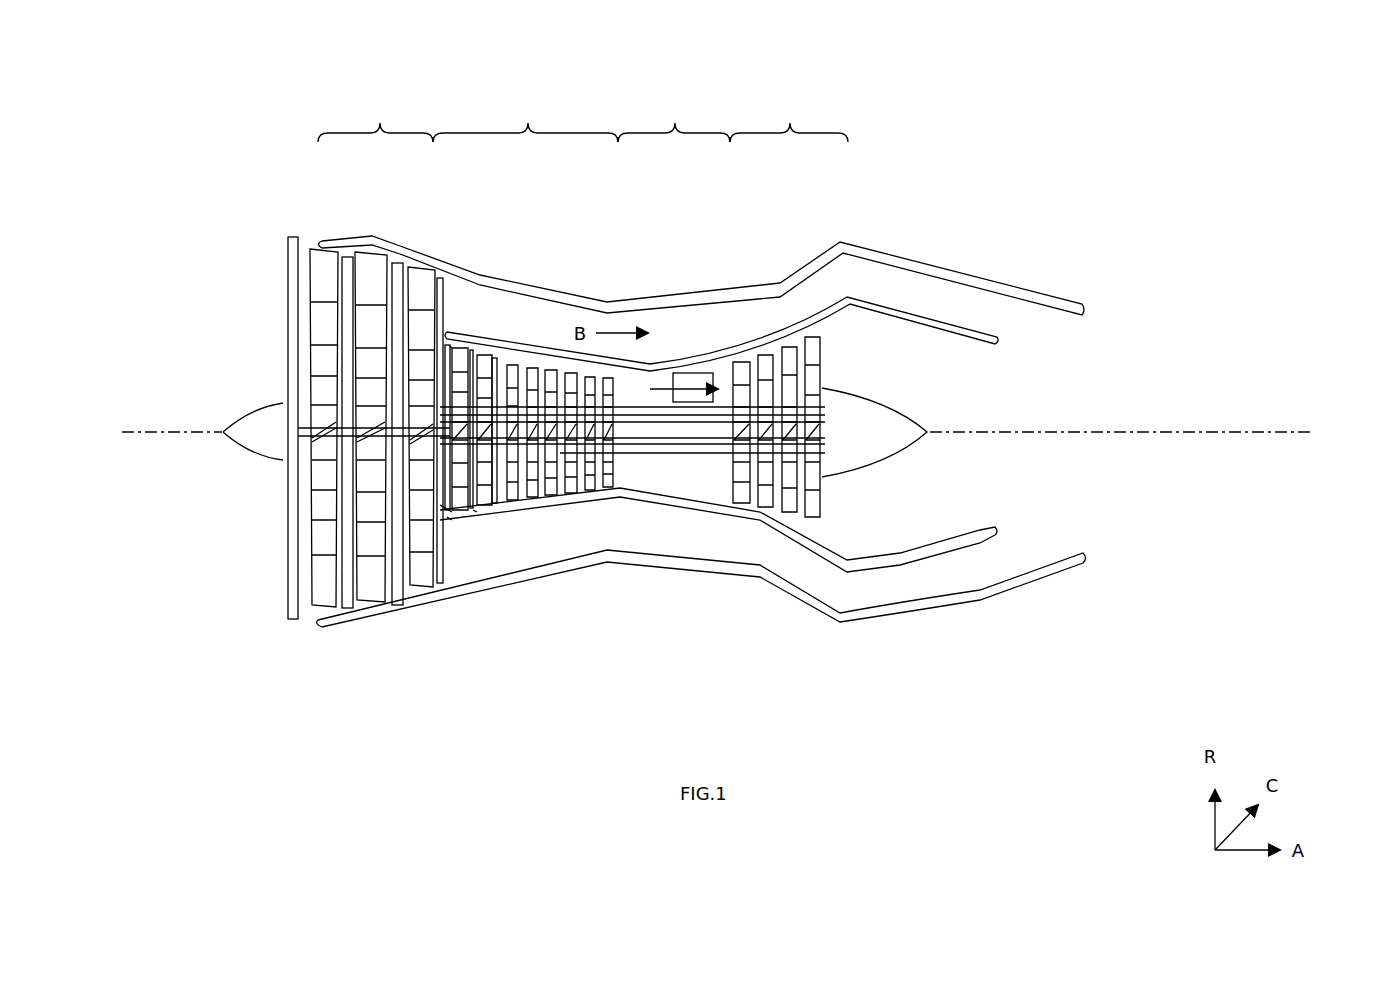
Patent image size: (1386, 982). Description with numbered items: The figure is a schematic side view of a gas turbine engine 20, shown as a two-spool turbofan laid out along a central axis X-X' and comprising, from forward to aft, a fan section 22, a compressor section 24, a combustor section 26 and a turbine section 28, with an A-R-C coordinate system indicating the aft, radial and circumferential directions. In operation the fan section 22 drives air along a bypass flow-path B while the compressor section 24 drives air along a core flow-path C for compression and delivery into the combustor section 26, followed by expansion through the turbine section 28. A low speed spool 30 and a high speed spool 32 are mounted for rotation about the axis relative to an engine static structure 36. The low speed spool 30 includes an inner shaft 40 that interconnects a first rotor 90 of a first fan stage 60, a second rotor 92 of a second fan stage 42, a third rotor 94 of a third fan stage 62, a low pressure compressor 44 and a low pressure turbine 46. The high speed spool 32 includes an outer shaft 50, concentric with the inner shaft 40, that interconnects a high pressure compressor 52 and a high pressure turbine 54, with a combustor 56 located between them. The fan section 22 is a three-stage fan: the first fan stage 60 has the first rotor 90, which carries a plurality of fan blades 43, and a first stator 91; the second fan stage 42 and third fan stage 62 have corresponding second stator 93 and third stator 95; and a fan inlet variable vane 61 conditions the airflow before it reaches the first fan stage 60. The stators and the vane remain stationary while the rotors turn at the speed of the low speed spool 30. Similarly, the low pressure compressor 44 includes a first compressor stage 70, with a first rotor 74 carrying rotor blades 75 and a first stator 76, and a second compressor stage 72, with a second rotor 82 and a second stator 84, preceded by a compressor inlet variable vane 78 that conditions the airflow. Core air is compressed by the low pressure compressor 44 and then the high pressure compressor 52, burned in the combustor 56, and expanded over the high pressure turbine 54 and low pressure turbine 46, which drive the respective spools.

The gas turbine engine 20 is at (958, 150).
The fan section 22 is at (375, 118).
The compressor section 24 is at (525, 118).
The combustor section 26 is at (674, 118).
The turbine section 28 is at (789, 118).
The low speed spool 30 is at (668, 452).
The high speed spool 32 is at (713, 462).
The engine static structure 36 is at (880, 296).
The inner shaft 40 is at (628, 442).
The second fan stage 42 is at (398, 240).
The fan blades 43 is at (296, 503).
The low pressure compressor 44 is at (516, 326).
The low pressure turbine 46 is at (797, 530).
The outer shaft 50 is at (692, 458).
The high pressure compressor 52 is at (564, 330).
The high pressure turbine 54 is at (762, 334).
The combustor 56 is at (690, 372).
The first fan stage 60 is at (345, 228).
The fan inlet variable vane 61 is at (288, 550).
The third fan stage 62 is at (447, 250).
The first compressor stage 70 is at (462, 315).
The second compressor stage 72 is at (487, 325).
The first rotor 74 is at (484, 522).
The rotor blades 75 is at (468, 522).
The first stator 76 is at (478, 508).
The compressor inlet variable vane 78 is at (447, 514).
The second rotor 82 is at (495, 510).
The second stator 84 is at (490, 502).
The first rotor 90 is at (338, 612).
The first stator 91 is at (347, 610).
The second rotor 92 is at (378, 603).
The second stator 93 is at (400, 606).
The third rotor 94 is at (415, 588).
The third stator 95 is at (440, 584).